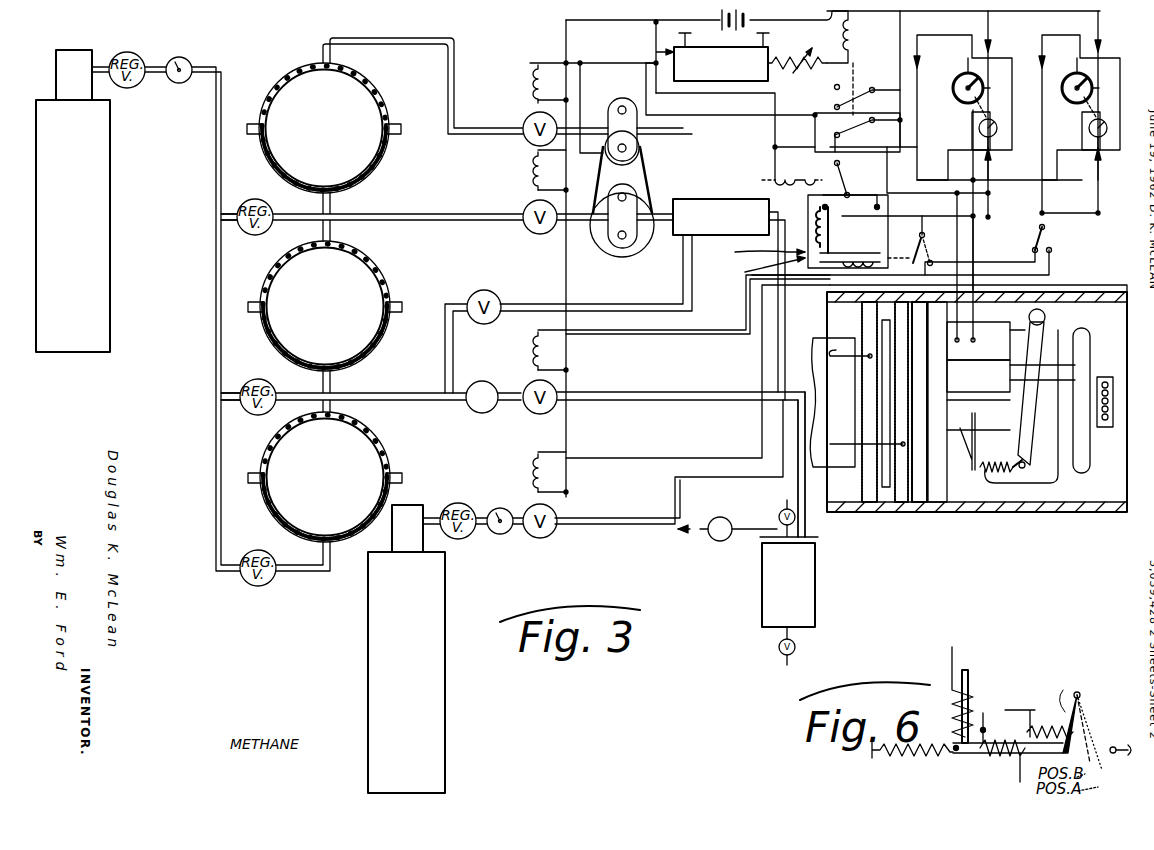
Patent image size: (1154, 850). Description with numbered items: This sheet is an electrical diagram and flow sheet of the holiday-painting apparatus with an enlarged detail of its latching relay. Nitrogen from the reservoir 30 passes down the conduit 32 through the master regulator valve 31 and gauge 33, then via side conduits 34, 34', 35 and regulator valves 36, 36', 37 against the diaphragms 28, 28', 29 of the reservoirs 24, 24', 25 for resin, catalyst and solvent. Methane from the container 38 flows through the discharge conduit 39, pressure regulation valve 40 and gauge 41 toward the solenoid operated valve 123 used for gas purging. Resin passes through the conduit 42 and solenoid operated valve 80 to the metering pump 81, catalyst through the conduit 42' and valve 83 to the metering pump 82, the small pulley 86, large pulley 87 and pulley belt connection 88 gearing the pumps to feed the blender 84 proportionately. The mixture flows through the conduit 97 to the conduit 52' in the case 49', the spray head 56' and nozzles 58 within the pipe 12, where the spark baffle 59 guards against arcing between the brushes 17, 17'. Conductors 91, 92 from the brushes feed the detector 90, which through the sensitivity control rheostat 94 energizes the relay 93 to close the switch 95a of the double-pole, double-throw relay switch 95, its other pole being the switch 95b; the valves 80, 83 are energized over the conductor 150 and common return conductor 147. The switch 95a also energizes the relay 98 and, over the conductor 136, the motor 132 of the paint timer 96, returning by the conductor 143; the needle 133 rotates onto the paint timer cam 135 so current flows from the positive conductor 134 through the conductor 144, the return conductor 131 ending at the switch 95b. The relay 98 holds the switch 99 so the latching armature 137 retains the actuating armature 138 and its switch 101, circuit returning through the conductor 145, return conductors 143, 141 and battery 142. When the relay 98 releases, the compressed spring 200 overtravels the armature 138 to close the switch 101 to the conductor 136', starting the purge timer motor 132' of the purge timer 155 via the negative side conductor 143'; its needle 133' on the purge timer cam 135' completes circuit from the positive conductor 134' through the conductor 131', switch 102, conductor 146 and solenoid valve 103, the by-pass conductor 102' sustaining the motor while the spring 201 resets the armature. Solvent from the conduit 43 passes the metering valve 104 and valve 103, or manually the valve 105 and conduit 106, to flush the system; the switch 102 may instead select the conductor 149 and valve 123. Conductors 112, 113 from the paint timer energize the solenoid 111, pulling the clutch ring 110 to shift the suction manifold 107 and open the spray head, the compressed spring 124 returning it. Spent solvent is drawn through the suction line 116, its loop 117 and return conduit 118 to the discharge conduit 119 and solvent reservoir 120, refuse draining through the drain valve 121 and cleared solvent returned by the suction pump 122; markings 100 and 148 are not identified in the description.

In FIG. 3, the pipe 12 is at (1094, 285).
In FIG. 3, the wire bristles or brushes 17 is at (864, 427).
In FIG. 3, the brush 17' is at (914, 427).
In FIG. 3, the reservoir 24 is at (332, 128).
In FIG. 3, the reservoir 24' is at (326, 301).
In FIG. 3, the reservoir 25 is at (390, 439).
In FIG. 3, the diaphragm 28 is at (339, 159).
In FIG. 3, the diaphragm 28' is at (325, 337).
In FIG. 3, the diaphragm 29 is at (358, 511).
In FIG. 3, the nitrogen reservoir 30 is at (80, 294).
In FIG. 3, the master regulator valve 31 is at (127, 52).
In FIG. 3, the conduit 32 is at (98, 66).
In FIG. 3, the gauge 33 is at (179, 57).
In FIG. 3, the side conduit 34 is at (234, 237).
In FIG. 3, the side conduit 34' is at (236, 424).
In FIG. 3, the side conduit 35 is at (218, 580).
In FIG. 3, the regulator valve 36 is at (252, 199).
In FIG. 3, the regulator valve 36' is at (254, 375).
In FIG. 3, the regulator valve 37 is at (276, 585).
In FIG. 3, the pressurized bottle or container 38 is at (408, 667).
In FIG. 3, the discharge conduit 39 is at (432, 512).
In FIG. 3, the pressure regulation valve 40 is at (456, 501).
In FIG. 3, the gauge 41 is at (495, 507).
In FIG. 3, the conduit 42 is at (423, 86).
In FIG. 3, the conduit 42' is at (398, 211).
In FIG. 3, the solvent conduit 43 is at (408, 390).
In FIG. 3, the case 49' is at (823, 464).
In FIG. 3, the conduit 52' is at (824, 390).
In FIG. 3, the spray head 56' is at (1098, 395).
In FIG. 3, the spray head nozzles 58 is at (1105, 427).
In FIG. 3, the spark baffle 59 is at (935, 381).
In FIG. 3, the solenoid operated valve 80 is at (528, 112).
In FIG. 3, the metering pump 81 is at (600, 118).
In FIG. 3, the metering pump 82 is at (612, 239).
In FIG. 3, the solenoid operated valve 83 is at (528, 203).
In FIG. 3, the blender 84 is at (712, 198).
In FIG. 3, the small pulley 86 is at (642, 146).
In FIG. 3, the large pulley 87 is at (648, 250).
In FIG. 3, the pulley belt connection 88 is at (648, 166).
In FIG. 3, the detector 90 is at (660, 52).
In FIG. 3, the conductor 91 is at (680, 35).
In FIG. 3, the conductor 92 is at (768, 35).
In FIG. 3, the relay 93 is at (862, 34).
In FIG. 3, the sensitivity control rheostat 94 is at (803, 55).
In FIG. 3, the double-pole, double-throw relay switch 95 is at (868, 108).
In FIG. 3, the switch 95a is at (858, 139).
In FIG. 3, the switch 95b is at (820, 91).
In FIG. 3, the paint timer 96 is at (942, 71).
In FIG. 3, the conduit 97 is at (758, 306).
In FIG. 3, the relay 98 is at (775, 178).
In FIG. 3, the switch 99 is at (850, 172).
In FIG. 3, the relay assembly 100 is at (758, 269).
In FIG. 6, the relay assembly 100 is at (1058, 660).
In FIG. 3, the switch 101 is at (912, 247).
In FIG. 6, the switch 101 is at (1084, 719).
In FIG. 3, the switch 102 is at (917, 258).
In FIG. 3, the by-pass conductor 102' is at (1005, 248).
In FIG. 3, the solenoid valve 103 is at (530, 386).
In FIG. 3, the metering valve 104 is at (470, 380).
In FIG. 3, the valve 105 is at (486, 290).
In FIG. 3, the conduit 106 is at (642, 302).
In FIG. 3, the suction manifold 107 is at (1052, 340).
In FIG. 3, the clutch ring 110 is at (1030, 449).
In FIG. 3, the solenoid 111 is at (980, 341).
In FIG. 3, the conductor 112 is at (975, 231).
In FIG. 3, the conductor 113 is at (960, 249).
In FIG. 3, the suction line 116 is at (1060, 489).
In FIG. 3, the loop 117 is at (993, 483).
In FIG. 3, the return conduit 118 is at (1005, 445).
In FIG. 3, the discharge conduit 119 is at (780, 496).
In FIG. 3, the solvent reservoir 120 is at (775, 591).
In FIG. 3, the drain valve 121 is at (775, 630).
In FIG. 3, the suction pump 122 is at (728, 517).
In FIG. 3, the solenoid operated valve 123 is at (542, 541).
In FIG. 3, the compressed spring 124 is at (1025, 467).
In FIG. 3, the return conductor 131 is at (964, 95).
In FIG. 3, the conductor 131' is at (1065, 107).
In FIG. 3, the motor 132 is at (956, 131).
In FIG. 3, the purge timer motor 132' is at (1111, 153).
In FIG. 3, the needle 133 is at (953, 83).
In FIG. 3, the purge timer needle 133' is at (1056, 80).
In FIG. 3, the positive conductor 134 is at (1008, 114).
In FIG. 3, the positive conductor 134' is at (1082, 111).
In FIG. 3, the paint timer cam 135 is at (951, 111).
In FIG. 3, the purge timer cam 135' is at (1054, 108).
In FIG. 3, the conductor 136 is at (938, 173).
In FIG. 3, the conductor 136' is at (1070, 197).
In FIG. 6, the conductor 136' is at (1111, 726).
In FIG. 3, the latching armature 137 is at (808, 212).
In FIG. 6, the latching armature 137 is at (970, 677).
In FIG. 3, the actuating armature 138 is at (870, 253).
In FIG. 6, the actuating armature 138 is at (968, 755).
In FIG. 3, the return conductor 141 is at (735, 107).
In FIG. 3, the battery 142 is at (716, 23).
In FIG. 3, the return conductor 143 is at (999, 200).
In FIG. 3, the negative side conductor 143' is at (1028, 165).
In FIG. 3, the conductor 144 is at (902, 39).
In FIG. 3, the conductor 145 is at (930, 204).
In FIG. 3, the conductor 146 is at (645, 339).
In FIG. 3, the common return conductor 147 is at (566, 48).
In FIG. 3, the methane line 148 is at (672, 499).
In FIG. 3, the conductor 149 is at (714, 455).
In FIG. 3, the conductor 150 is at (745, 115).
In FIG. 3, the purge timer 155 is at (1110, 50).
In FIG. 6, the compressed spring 200 is at (1048, 725).
In FIG. 6, the spring 201 is at (910, 762).